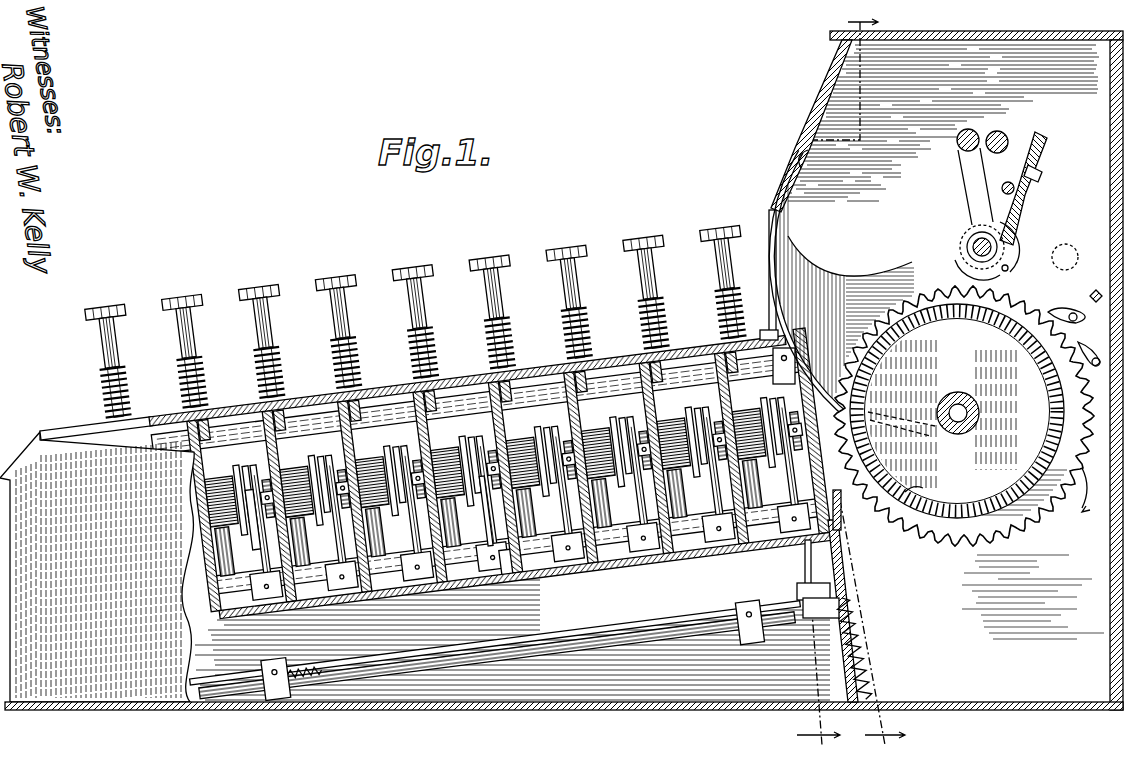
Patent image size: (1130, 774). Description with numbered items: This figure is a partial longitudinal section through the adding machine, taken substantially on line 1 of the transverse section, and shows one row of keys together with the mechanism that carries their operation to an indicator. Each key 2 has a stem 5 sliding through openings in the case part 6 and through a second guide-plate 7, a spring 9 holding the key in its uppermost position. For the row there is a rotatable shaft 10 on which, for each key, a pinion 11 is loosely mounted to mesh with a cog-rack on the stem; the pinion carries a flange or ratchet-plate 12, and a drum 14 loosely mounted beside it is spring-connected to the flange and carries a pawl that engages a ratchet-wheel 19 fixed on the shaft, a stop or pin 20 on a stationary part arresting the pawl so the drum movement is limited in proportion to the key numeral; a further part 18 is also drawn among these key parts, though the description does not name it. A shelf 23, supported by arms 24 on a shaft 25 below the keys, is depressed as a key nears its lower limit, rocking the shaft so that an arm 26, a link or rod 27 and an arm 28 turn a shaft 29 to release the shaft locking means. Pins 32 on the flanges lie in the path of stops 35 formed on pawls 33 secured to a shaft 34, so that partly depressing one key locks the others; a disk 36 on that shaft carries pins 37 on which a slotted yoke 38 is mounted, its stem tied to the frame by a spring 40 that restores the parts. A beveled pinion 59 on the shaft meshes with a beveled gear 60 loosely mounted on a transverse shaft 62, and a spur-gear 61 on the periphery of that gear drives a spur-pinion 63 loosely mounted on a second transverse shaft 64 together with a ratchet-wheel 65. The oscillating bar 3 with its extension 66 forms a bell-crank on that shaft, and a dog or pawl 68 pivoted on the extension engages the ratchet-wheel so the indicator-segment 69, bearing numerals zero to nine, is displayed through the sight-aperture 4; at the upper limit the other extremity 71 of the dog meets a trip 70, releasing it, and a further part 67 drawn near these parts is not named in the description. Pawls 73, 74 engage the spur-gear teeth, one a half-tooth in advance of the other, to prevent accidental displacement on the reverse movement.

The section line 1 1 is at (958, 34).
The key 2 is at (136, 292).
The oscillating bar 3 is at (850, 272).
The sight-aperture 4 is at (790, 160).
The key-stem 5 is at (117, 343).
The case part 6 is at (457, 376).
The guide-plate 7 is at (653, 558).
The spring 9 is at (124, 396).
The shaft 10 is at (812, 362).
The pinion 11 is at (232, 500).
The flange or ratchet-plate 12 is at (250, 430).
The drum 14 is at (252, 476).
The pawl arm 18 is at (320, 522).
The ratchet-wheel 19 is at (394, 432).
The stop or pin 20 is at (325, 472).
The shelf 23 is at (492, 648).
The arm 24 is at (284, 702).
The shaft 25 is at (542, 656).
The arm 26 is at (833, 591).
The link or rod 27 is at (805, 572).
The arm 28 is at (790, 345).
The shaft 29 is at (603, 382).
The pin 32 is at (347, 600).
The pawl 33 is at (546, 514).
The shaft 34 is at (578, 568).
The stop 35 is at (527, 572).
The disk 36 is at (842, 525).
The pin 37 is at (906, 490).
The yoke 38 is at (846, 566).
The spring 40 is at (862, 656).
The beveled pinion 59 is at (880, 410).
The beveled gear 60 is at (957, 411).
The spur-gear 61 is at (1036, 516).
The transverse shaft 62 is at (976, 408).
The spur-pinion 63 is at (1019, 247).
The second transverse shaft 64 is at (1008, 252).
The ratchet-wheel 65 is at (1012, 265).
The extension 66 is at (1040, 174).
The pin 67 is at (1000, 134).
The dog or pawl 68 is at (1008, 240).
The indicator-segment 69 is at (800, 256).
The trip 70 is at (1096, 290).
The extremity of dog 71 is at (1042, 146).
The pawl 73 is at (1068, 312).
The pawl 74 is at (1094, 356).